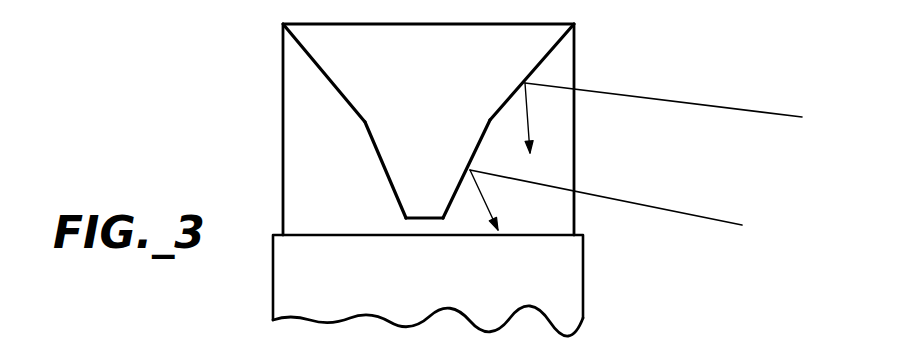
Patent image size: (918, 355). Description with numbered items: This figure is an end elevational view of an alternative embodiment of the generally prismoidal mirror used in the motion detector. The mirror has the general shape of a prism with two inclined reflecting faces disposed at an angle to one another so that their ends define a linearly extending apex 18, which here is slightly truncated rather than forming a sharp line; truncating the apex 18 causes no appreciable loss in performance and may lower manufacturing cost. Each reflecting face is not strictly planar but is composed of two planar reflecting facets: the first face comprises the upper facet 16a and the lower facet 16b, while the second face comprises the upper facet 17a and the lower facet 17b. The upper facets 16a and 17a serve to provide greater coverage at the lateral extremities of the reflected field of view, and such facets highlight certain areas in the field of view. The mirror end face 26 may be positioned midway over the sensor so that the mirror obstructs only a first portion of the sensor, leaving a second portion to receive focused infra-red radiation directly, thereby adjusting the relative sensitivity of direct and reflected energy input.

The upper planar reflecting facet of reflecting face 16 16a is at (307, 57).
The lower planar reflecting facet of reflecting face 16 16b is at (390, 182).
The upper planar reflecting facet of reflecting face 17 17a is at (547, 58).
The lower planar reflecting facet of reflecting face 17 17b is at (477, 150).
The apex 18 is at (421, 221).
The mirror end face 26 is at (385, 100).